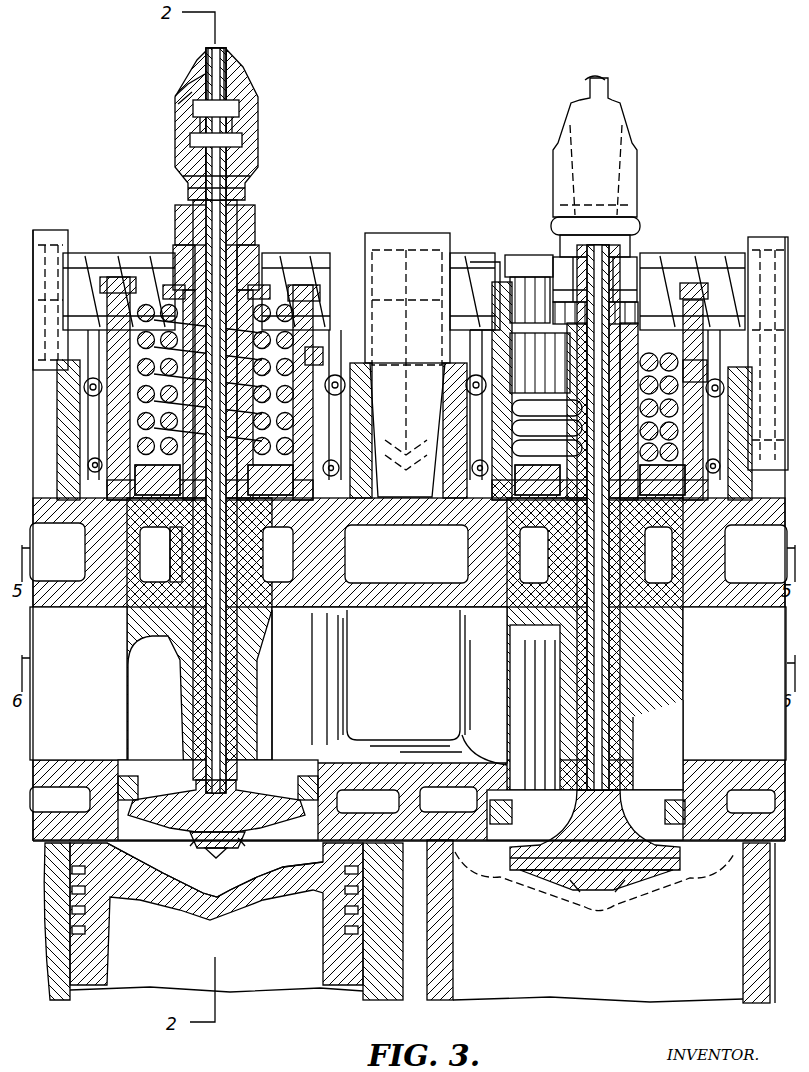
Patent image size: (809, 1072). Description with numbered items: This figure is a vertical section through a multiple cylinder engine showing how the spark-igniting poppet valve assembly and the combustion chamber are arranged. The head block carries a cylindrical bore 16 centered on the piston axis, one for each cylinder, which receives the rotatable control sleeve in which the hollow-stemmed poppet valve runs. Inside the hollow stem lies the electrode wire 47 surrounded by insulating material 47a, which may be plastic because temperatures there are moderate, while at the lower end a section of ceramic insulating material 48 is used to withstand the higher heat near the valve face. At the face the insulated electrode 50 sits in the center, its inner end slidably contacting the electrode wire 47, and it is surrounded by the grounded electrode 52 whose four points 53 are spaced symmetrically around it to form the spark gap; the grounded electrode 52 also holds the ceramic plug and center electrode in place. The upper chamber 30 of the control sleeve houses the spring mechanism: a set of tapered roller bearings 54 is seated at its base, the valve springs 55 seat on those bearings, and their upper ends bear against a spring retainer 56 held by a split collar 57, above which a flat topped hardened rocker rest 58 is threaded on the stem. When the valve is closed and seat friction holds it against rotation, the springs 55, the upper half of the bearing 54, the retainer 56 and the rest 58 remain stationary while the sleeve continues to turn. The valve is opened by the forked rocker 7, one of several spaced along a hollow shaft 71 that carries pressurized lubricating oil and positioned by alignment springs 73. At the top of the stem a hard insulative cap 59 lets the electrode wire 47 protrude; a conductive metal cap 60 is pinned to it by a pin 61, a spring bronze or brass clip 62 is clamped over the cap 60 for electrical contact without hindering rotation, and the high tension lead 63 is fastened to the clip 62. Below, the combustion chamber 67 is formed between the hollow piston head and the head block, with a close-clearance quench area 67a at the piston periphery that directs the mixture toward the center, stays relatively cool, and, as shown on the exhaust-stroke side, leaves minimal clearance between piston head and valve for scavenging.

The high tension lead 63 is at (226, 60).
The spring bronze or brass clip 62 is at (192, 100).
The conductive metal cap 60 is at (256, 99).
The pin 61 is at (240, 120).
The hard insulative cap 59 is at (188, 184).
The rocker 7 is at (248, 222).
The rocker rest 58 is at (172, 255).
The spring retainer 56 is at (268, 262).
The split collar 57 is at (216, 295).
The valve spring chamber 30 is at (165, 385).
The valve springs 55 is at (305, 358).
The tapered roller bearings 54 is at (410, 480).
The hollow shaft 71 is at (485, 265).
The alignment springs 73 is at (508, 278).
The cylindrical bore 16 is at (120, 552).
The electrode wire 47 is at (215, 546).
The insulating material 47a is at (212, 568).
The ceramic insulating material 48 is at (205, 737).
The grounded electrode 52 is at (255, 830).
The points 53 is at (200, 845).
The insulated electrode 50 is at (213, 850).
The combustion chamber 67 is at (220, 892).
The quench area 67a is at (330, 840).